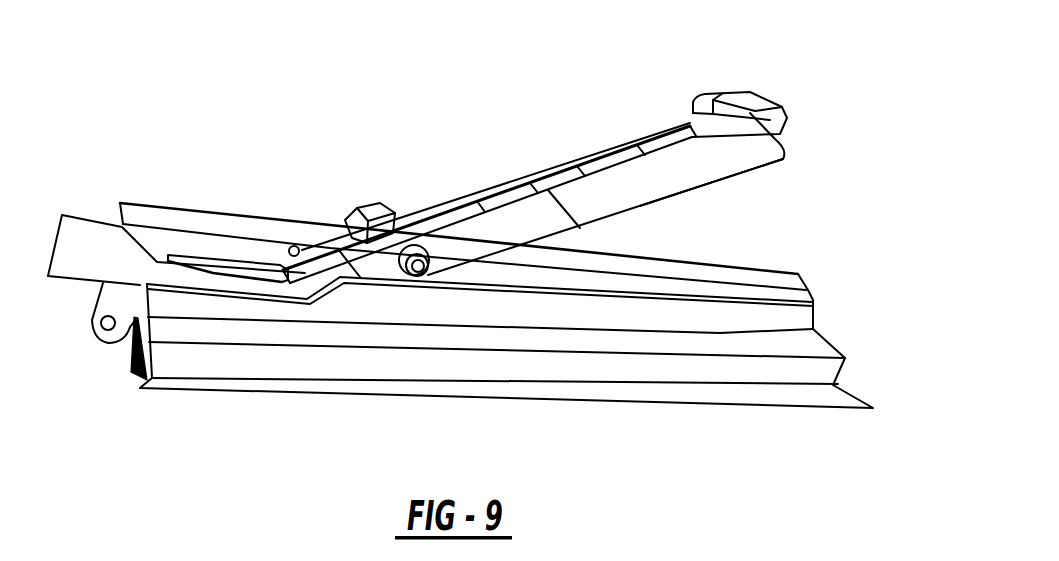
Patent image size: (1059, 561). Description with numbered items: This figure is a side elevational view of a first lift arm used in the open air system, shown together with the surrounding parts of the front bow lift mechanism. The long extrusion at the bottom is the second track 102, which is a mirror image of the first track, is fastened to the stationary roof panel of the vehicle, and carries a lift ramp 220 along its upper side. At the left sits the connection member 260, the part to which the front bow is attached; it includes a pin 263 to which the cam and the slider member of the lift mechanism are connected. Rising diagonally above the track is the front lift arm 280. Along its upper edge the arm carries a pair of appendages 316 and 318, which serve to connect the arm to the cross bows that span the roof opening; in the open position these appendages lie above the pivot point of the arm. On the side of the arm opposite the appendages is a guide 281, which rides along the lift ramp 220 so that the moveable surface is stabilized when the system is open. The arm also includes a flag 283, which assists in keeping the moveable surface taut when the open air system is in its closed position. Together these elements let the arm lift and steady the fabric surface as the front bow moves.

The second track 102 is at (303, 347).
The lift ramp 220 is at (363, 305).
The connection member 260 is at (100, 250).
The pin 263 is at (108, 330).
The front lift arm 280 is at (478, 233).
The guide 281 is at (418, 270).
The flag 283 is at (653, 177).
The appendage 316 is at (362, 204).
The appendage 318 is at (702, 92).